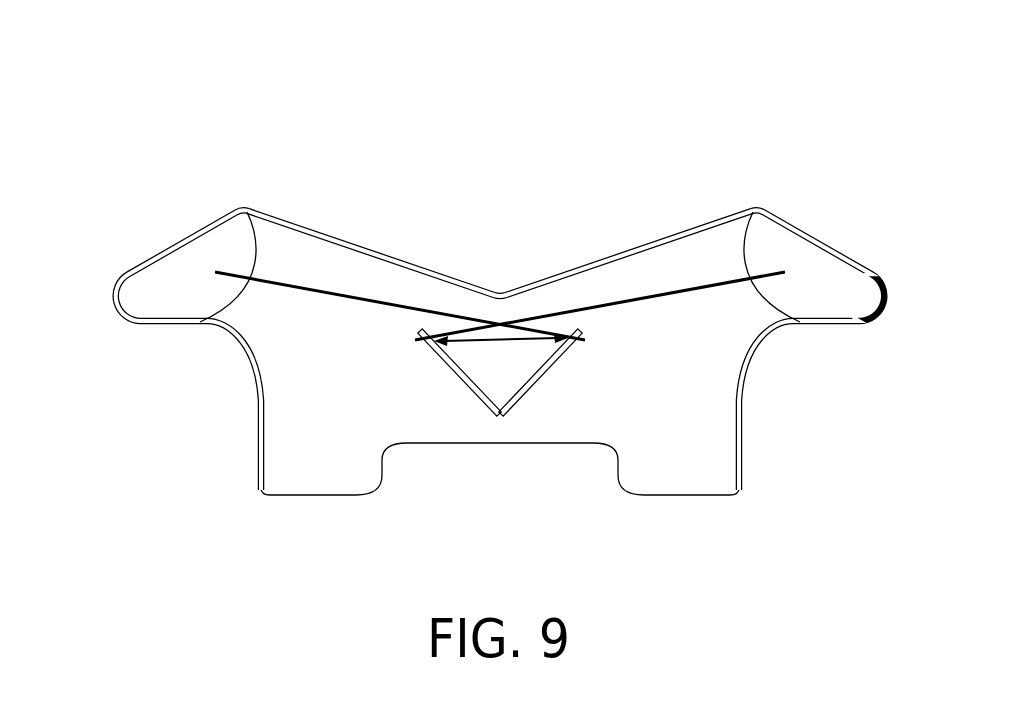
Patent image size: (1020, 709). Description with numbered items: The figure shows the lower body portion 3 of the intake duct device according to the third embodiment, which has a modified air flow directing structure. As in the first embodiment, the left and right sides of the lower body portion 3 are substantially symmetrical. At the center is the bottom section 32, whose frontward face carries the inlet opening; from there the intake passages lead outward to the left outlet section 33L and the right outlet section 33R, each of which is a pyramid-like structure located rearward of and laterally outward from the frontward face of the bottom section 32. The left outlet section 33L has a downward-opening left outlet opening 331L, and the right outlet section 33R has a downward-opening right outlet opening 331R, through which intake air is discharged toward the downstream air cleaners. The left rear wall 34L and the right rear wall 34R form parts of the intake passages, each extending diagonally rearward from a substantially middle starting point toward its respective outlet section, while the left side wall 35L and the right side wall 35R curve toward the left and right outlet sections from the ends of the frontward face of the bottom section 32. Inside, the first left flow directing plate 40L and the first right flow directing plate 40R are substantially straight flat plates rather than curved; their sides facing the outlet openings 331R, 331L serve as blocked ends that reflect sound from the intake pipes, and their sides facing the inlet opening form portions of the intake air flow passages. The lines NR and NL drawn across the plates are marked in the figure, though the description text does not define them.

The lower body portion 3 is at (98, 142).
The bottom section 32 is at (605, 292).
The right outlet section 33R is at (112, 290).
The left outlet section 33L is at (888, 290).
The right outlet opening 331R is at (177, 288).
The left outlet opening 331L is at (823, 288).
The right rear wall 34R is at (340, 237).
The left rear wall 34L is at (660, 237).
The right side wall 35R is at (258, 447).
The left side wall 35L is at (742, 447).
The first right flow directing plate 40R is at (447, 364).
The first left flow directing plate 40L is at (553, 364).
The right normal line NR is at (400, 297).
The left normal line NL is at (600, 297).